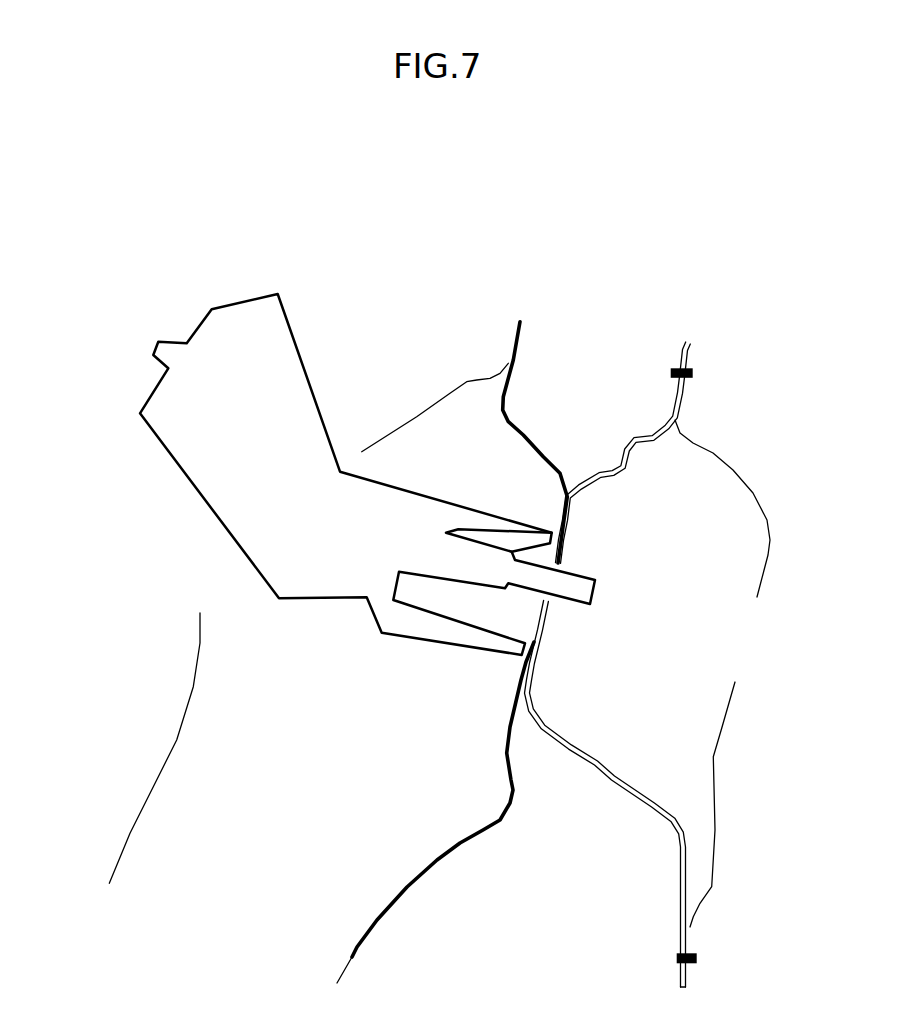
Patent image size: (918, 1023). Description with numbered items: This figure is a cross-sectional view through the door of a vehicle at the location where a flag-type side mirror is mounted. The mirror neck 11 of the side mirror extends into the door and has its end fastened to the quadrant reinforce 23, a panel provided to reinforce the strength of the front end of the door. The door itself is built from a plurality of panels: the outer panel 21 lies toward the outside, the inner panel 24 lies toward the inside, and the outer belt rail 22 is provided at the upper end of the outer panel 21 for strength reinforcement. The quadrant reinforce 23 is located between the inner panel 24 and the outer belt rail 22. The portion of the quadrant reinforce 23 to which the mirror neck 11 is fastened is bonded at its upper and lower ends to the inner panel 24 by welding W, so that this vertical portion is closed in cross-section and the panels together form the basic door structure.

The mirror neck 11 is at (242, 480).
The outer panel 21 is at (175, 745).
The outer belt rail 22 is at (513, 425).
The quadrant reinforce 23 is at (613, 783).
The inner panel 24 is at (722, 728).
The welding W is at (667, 667).